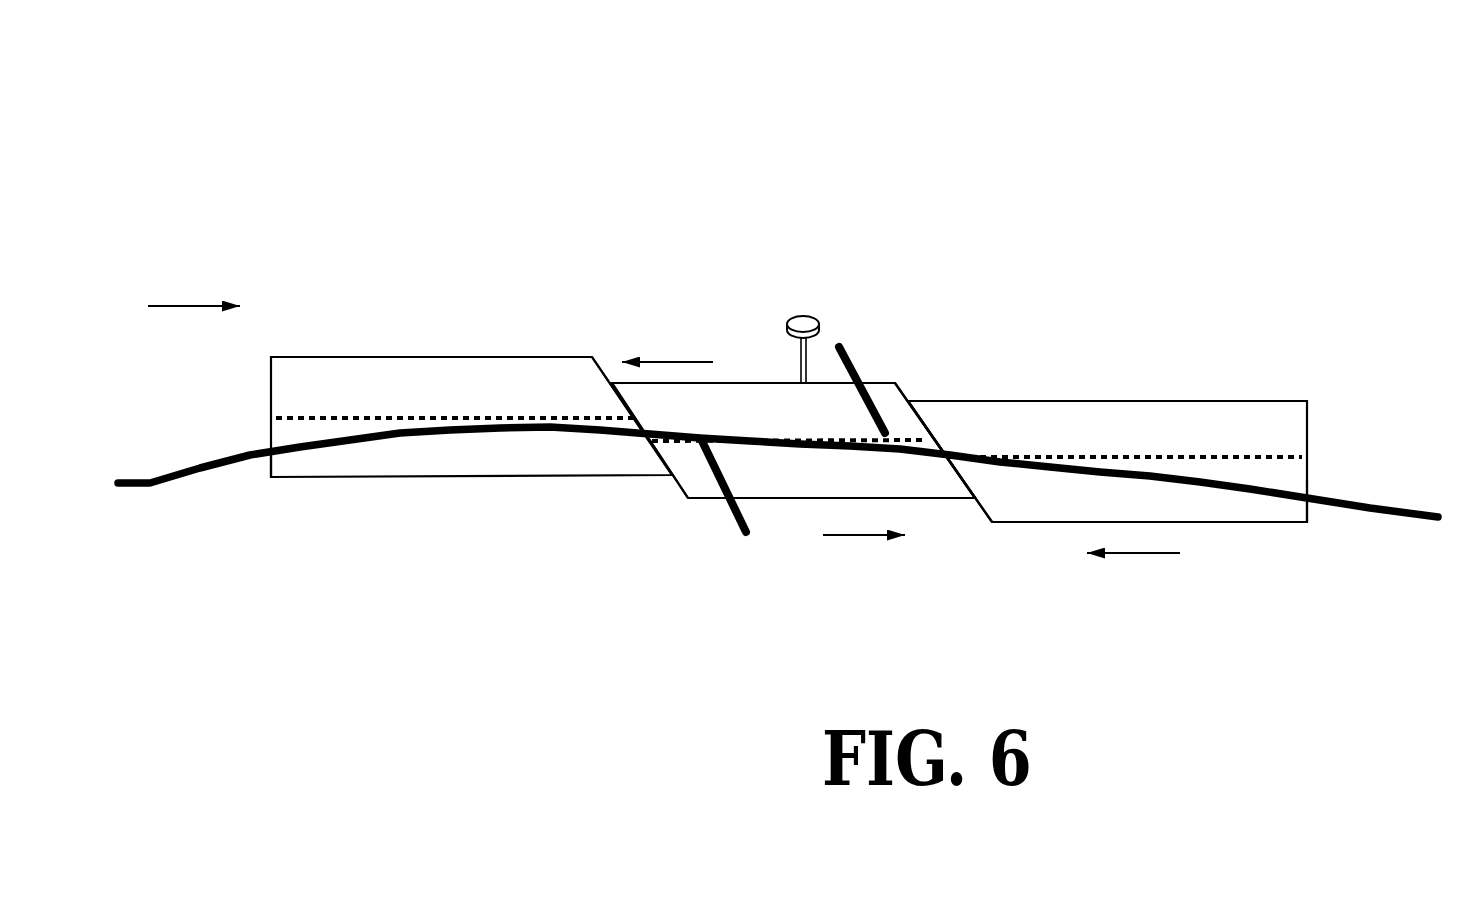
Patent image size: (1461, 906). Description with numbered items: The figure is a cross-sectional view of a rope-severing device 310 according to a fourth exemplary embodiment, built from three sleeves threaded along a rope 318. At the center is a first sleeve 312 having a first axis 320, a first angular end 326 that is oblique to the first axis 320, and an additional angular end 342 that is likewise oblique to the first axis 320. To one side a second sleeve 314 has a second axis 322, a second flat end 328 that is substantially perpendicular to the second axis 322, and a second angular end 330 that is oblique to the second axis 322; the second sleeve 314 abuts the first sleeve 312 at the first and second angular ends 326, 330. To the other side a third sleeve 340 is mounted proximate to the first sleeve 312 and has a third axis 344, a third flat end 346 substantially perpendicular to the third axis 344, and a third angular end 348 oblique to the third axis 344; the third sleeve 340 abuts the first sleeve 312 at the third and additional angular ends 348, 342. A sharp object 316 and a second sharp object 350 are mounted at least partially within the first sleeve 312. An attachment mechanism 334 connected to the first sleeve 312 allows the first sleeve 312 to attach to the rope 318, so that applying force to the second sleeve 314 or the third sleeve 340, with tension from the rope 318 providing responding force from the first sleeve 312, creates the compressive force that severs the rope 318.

The rope-severing device 310 is at (683, 163).
The first sleeve 312 is at (745, 382).
The second sleeve 314 is at (1118, 399).
The sharp object 316 is at (862, 363).
The rope 318 is at (147, 474).
The first axis 320 is at (665, 452).
The second axis 322 is at (1205, 462).
The first angular end 326 is at (900, 382).
The second flat end 328 is at (1313, 510).
The second angular end 330 is at (968, 507).
The attachment mechanism 334 is at (822, 323).
The third sleeve 340 is at (302, 352).
The additional angular end 342 is at (680, 502).
The third axis 344 is at (418, 417).
The third flat end 346 is at (267, 468).
The third angular end 348 is at (603, 357).
The second sharp object 350 is at (728, 522).